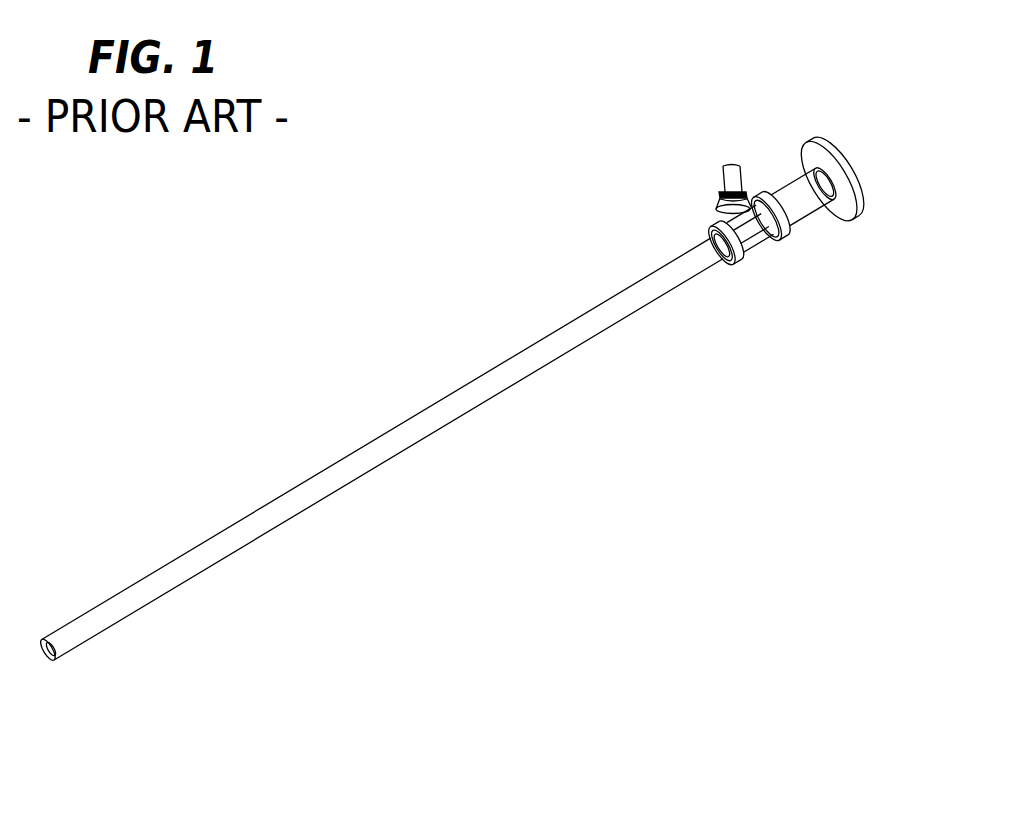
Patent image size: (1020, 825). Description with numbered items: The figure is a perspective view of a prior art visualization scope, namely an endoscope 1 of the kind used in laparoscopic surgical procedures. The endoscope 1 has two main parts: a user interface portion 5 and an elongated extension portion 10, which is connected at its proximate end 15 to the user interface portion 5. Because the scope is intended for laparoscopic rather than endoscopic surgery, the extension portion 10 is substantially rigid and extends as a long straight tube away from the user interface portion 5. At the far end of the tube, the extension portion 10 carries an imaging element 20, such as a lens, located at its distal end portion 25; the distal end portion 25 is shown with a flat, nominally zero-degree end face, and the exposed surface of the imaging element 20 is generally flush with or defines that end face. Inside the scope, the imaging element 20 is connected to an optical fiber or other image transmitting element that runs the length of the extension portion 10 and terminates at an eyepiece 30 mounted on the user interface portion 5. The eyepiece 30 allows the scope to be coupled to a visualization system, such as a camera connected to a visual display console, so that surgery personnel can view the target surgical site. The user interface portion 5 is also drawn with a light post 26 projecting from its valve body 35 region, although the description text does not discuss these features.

The endoscope 1 is at (368, 329).
The user interface portion 5 is at (781, 218).
The extension portion 10 is at (373, 456).
The proximate end 15 is at (720, 247).
The imaging element 20 is at (50, 658).
The distal end portion 25 is at (55, 636).
The light post 26 is at (738, 165).
The eyepiece 30 is at (836, 148).
The valve body 35 is at (719, 213).